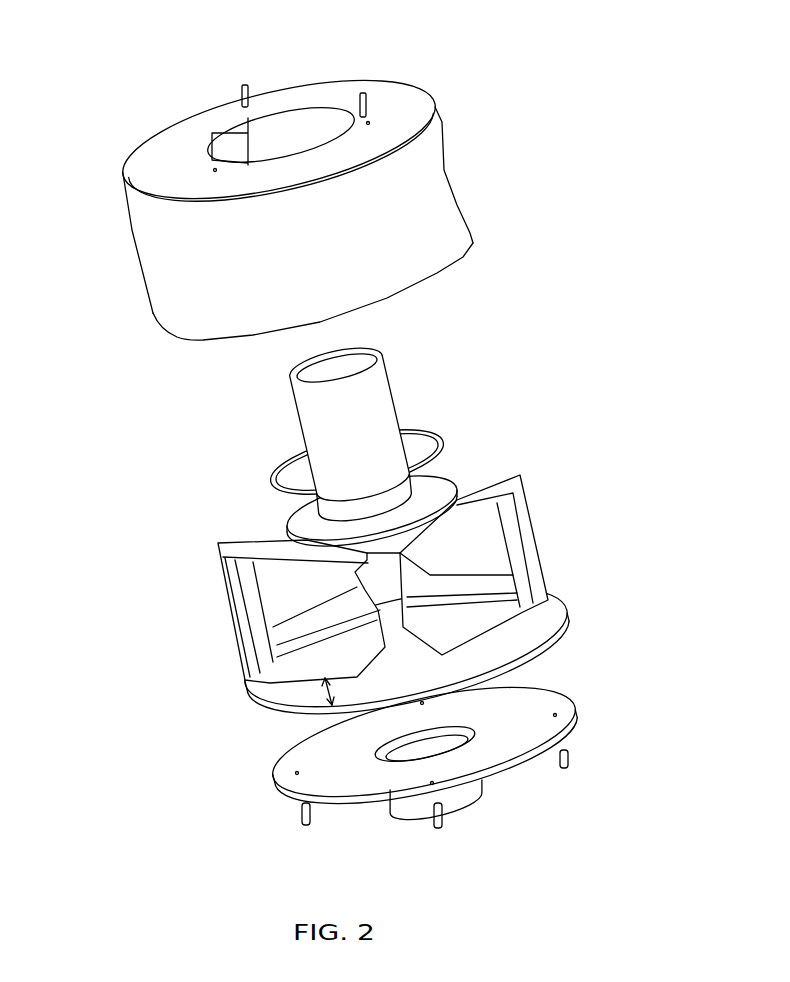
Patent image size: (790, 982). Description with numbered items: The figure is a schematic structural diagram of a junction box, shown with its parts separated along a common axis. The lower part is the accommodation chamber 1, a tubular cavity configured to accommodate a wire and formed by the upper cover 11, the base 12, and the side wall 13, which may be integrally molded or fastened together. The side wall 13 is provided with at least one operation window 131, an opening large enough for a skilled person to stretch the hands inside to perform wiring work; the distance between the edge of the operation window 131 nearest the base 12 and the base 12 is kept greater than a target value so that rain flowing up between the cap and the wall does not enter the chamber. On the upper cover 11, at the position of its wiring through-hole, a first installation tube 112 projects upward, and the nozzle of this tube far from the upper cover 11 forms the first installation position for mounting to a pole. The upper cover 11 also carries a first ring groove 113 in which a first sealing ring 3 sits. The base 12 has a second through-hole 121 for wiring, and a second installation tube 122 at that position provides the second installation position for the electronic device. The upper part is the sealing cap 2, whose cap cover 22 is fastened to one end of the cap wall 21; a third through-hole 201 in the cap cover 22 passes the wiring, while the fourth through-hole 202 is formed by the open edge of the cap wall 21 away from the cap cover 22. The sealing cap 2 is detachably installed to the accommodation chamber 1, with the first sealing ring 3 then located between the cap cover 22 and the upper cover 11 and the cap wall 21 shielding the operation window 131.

The accommodation chamber 1 is at (362, 593).
The upper cover 11 is at (429, 533).
The first installation tube 112 is at (370, 425).
The first ring groove 113 is at (443, 485).
The operation window 131 is at (498, 560).
The side wall 13 is at (528, 632).
The base 12 is at (451, 742).
The second through-hole 121 is at (442, 743).
The second installation tube 122 is at (453, 803).
The sealing cap 2 is at (281, 216).
The cap wall 21 is at (428, 162).
The cap cover 22 is at (420, 100).
The third through-hole 201 is at (290, 127).
The fourth through-hole 202 is at (170, 333).
The first sealing ring 3 is at (442, 440).